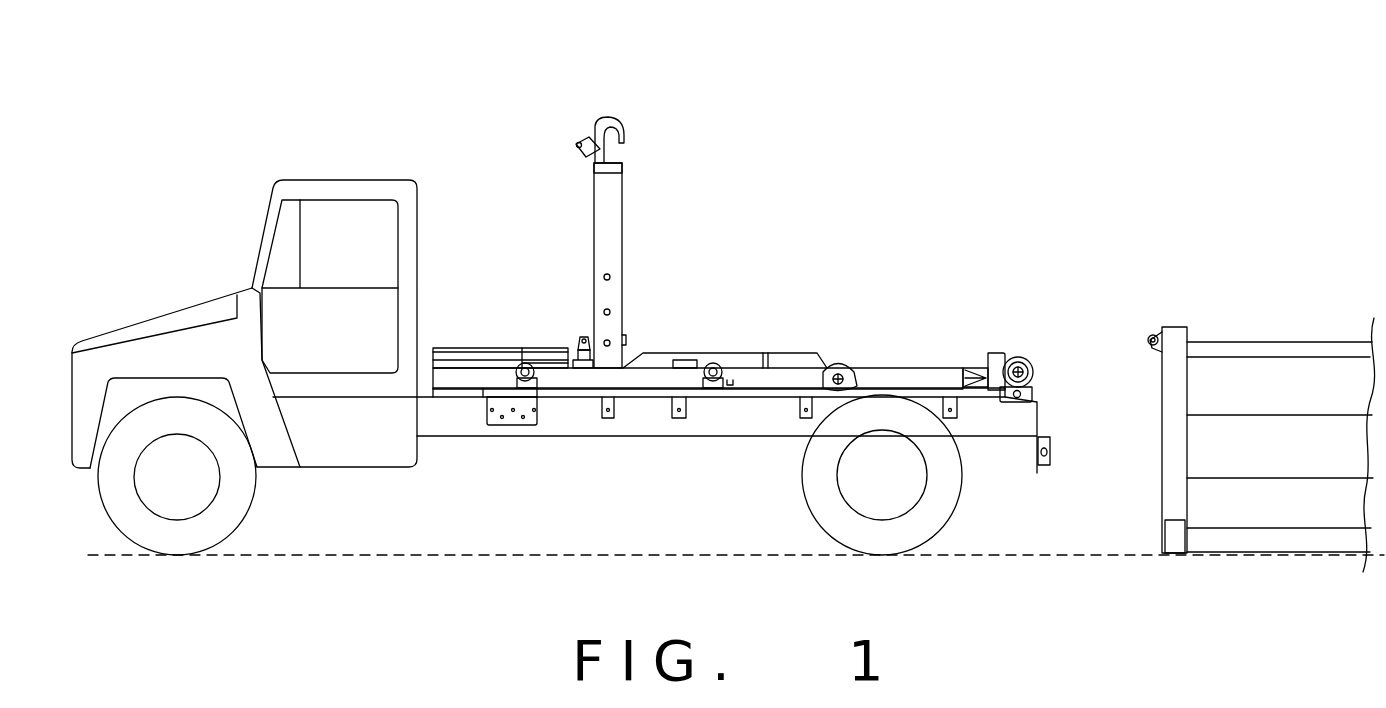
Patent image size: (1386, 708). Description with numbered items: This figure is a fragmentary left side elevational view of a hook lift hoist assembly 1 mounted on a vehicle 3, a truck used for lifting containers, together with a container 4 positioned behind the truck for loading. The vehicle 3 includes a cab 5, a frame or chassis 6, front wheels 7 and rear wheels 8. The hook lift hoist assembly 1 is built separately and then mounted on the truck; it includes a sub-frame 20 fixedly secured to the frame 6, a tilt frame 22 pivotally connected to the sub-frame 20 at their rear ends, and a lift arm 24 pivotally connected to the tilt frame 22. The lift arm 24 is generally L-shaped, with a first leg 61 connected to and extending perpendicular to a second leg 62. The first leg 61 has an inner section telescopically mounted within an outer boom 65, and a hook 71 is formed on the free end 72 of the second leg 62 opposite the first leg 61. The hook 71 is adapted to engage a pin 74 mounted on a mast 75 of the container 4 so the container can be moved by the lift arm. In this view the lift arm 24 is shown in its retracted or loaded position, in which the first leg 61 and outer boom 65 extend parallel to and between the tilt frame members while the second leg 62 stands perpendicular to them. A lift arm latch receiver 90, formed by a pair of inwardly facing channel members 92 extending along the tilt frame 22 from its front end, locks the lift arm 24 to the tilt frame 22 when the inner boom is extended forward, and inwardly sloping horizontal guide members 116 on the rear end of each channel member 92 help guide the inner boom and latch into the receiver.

The hook lift hoist assembly 1 is at (793, 225).
The vehicle 3 is at (190, 243).
The container 4 is at (1288, 342).
The cab 5 is at (333, 182).
The frame 6 is at (462, 435).
The front wheels 7 is at (177, 543).
The rear wheels 8 is at (852, 537).
The sub-frame 20 is at (572, 392).
The tilt frame 22 is at (890, 368).
The lift arm 24 is at (590, 232).
The first leg 61 is at (684, 352).
The second leg 62 is at (623, 254).
The outer boom 65 is at (780, 353).
The hook 71 is at (605, 120).
The free end 72 is at (623, 172).
The pin 74 is at (1158, 332).
The mast 75 is at (1170, 450).
The lift arm latch receiver 90 is at (507, 347).
The channel members 92 is at (467, 365).
The horizontal guide members 116 is at (572, 343).